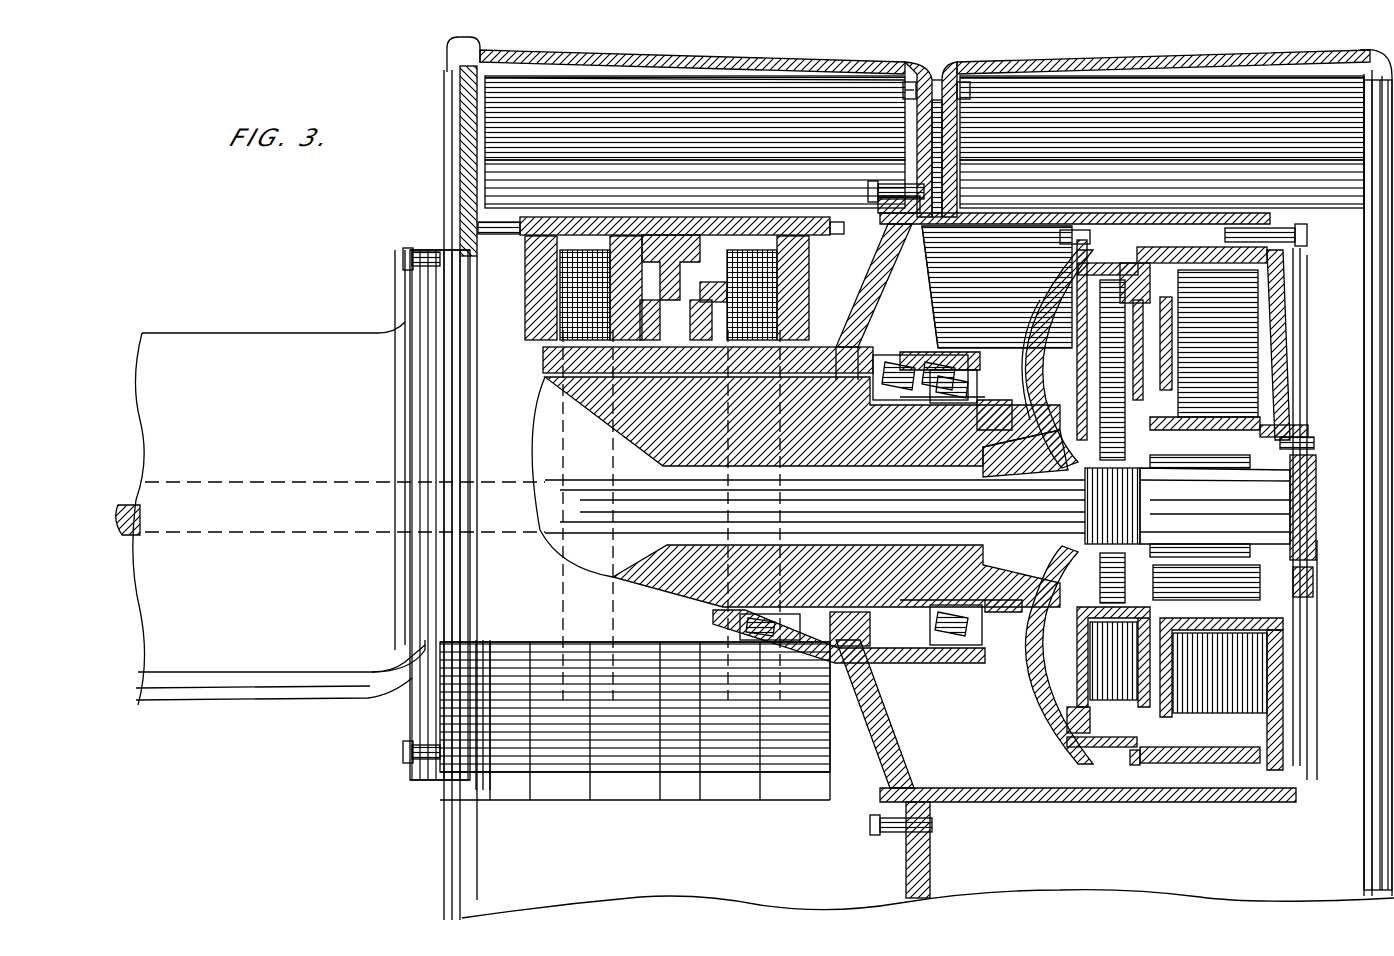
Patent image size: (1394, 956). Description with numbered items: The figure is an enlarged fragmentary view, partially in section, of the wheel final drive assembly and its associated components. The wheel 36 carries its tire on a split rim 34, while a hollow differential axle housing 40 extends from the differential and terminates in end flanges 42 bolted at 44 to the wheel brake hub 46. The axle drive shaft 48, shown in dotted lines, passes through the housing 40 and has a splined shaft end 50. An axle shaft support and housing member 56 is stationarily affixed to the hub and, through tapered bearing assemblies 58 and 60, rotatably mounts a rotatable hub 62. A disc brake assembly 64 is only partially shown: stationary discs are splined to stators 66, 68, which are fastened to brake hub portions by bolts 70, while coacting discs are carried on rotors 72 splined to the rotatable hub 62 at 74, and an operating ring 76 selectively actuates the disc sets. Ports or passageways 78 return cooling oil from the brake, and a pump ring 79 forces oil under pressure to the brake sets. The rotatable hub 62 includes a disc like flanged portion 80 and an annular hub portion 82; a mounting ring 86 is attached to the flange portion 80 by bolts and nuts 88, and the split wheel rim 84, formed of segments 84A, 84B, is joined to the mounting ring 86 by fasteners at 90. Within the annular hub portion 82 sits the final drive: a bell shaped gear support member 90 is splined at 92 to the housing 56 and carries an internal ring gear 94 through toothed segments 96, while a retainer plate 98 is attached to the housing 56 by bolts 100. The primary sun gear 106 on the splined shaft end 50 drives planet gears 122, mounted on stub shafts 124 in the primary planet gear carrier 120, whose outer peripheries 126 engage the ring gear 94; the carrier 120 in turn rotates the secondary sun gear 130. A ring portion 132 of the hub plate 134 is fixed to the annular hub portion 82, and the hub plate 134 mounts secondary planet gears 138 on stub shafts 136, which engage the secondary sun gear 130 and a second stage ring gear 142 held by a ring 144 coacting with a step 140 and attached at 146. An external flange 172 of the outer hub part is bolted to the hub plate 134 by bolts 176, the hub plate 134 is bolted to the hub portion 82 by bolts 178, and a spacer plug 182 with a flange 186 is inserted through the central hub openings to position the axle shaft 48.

The split rim 34 is at (1312, 56).
The wheel 36 is at (433, 68).
The hollow differential axle housing 40 is at (270, 682).
The end flanges 42 is at (404, 684).
The bolts 44 is at (424, 255).
The wheel brake hub 46 is at (562, 216).
The axle drive shaft 48 is at (132, 490).
The splined shaft end 50 is at (1086, 492).
The axle shaft support and housing member 56 is at (897, 612).
The tapered bearing assembly 58 is at (862, 600).
The tapered bearing assembly 60 is at (960, 648).
The rotatable hub 62 is at (862, 292).
The disc brake assembly 64 is at (622, 232).
The stator 66 is at (600, 220).
The stator 68 is at (766, 220).
The bolts 70 is at (486, 218).
The rotors 72 is at (652, 346).
The spline 74 is at (708, 346).
The brake operating ring 76 is at (674, 232).
The ports or passageways 78 is at (832, 380).
The cooling oil pump ring 79 is at (790, 632).
The disc like flanged portion 80 is at (886, 765).
The annular hub portion 82 is at (1112, 242).
The split wheel rim 84 is at (967, 48).
The rim segment 84A is at (653, 48).
The rim segment 84B is at (1162, 50).
The mounting ring 86 is at (905, 76).
The bolts and nuts 88 is at (950, 190).
The bell shaped gear support member 90 is at (970, 82).
The spline 92 is at (1016, 612).
The internal ring gear 94 is at (1092, 246).
The splined or toothed segments 96 is at (1068, 232).
The clamp or retainer plate 98 is at (1024, 415).
The bolts 100 is at (1062, 455).
The primary sun gear 106 is at (1067, 716).
The primary planet gear carrier 120 is at (1172, 606).
The planet gears 122 is at (1182, 232).
The stub shafts 124 is at (1040, 332).
The outer peripheries of planet gears 126 is at (1130, 256).
The secondary sun gear 130 is at (1292, 608).
The ring portion 132 is at (1208, 315).
The hub plate 134 is at (1302, 418).
The stub shafts 136 is at (1182, 332).
The secondary planet gears 138 is at (1306, 266).
The step 140 is at (1168, 748).
The second stage internally toothed ring gear 142 is at (1232, 240).
The ring 144 is at (1130, 765).
The attachment 146 is at (1130, 750).
The external flange 172 is at (1312, 580).
The bolts 176 is at (1302, 442).
The bolts 178 is at (1298, 250).
The spacer plug 182 is at (1215, 506).
The flange 186 is at (1312, 493).